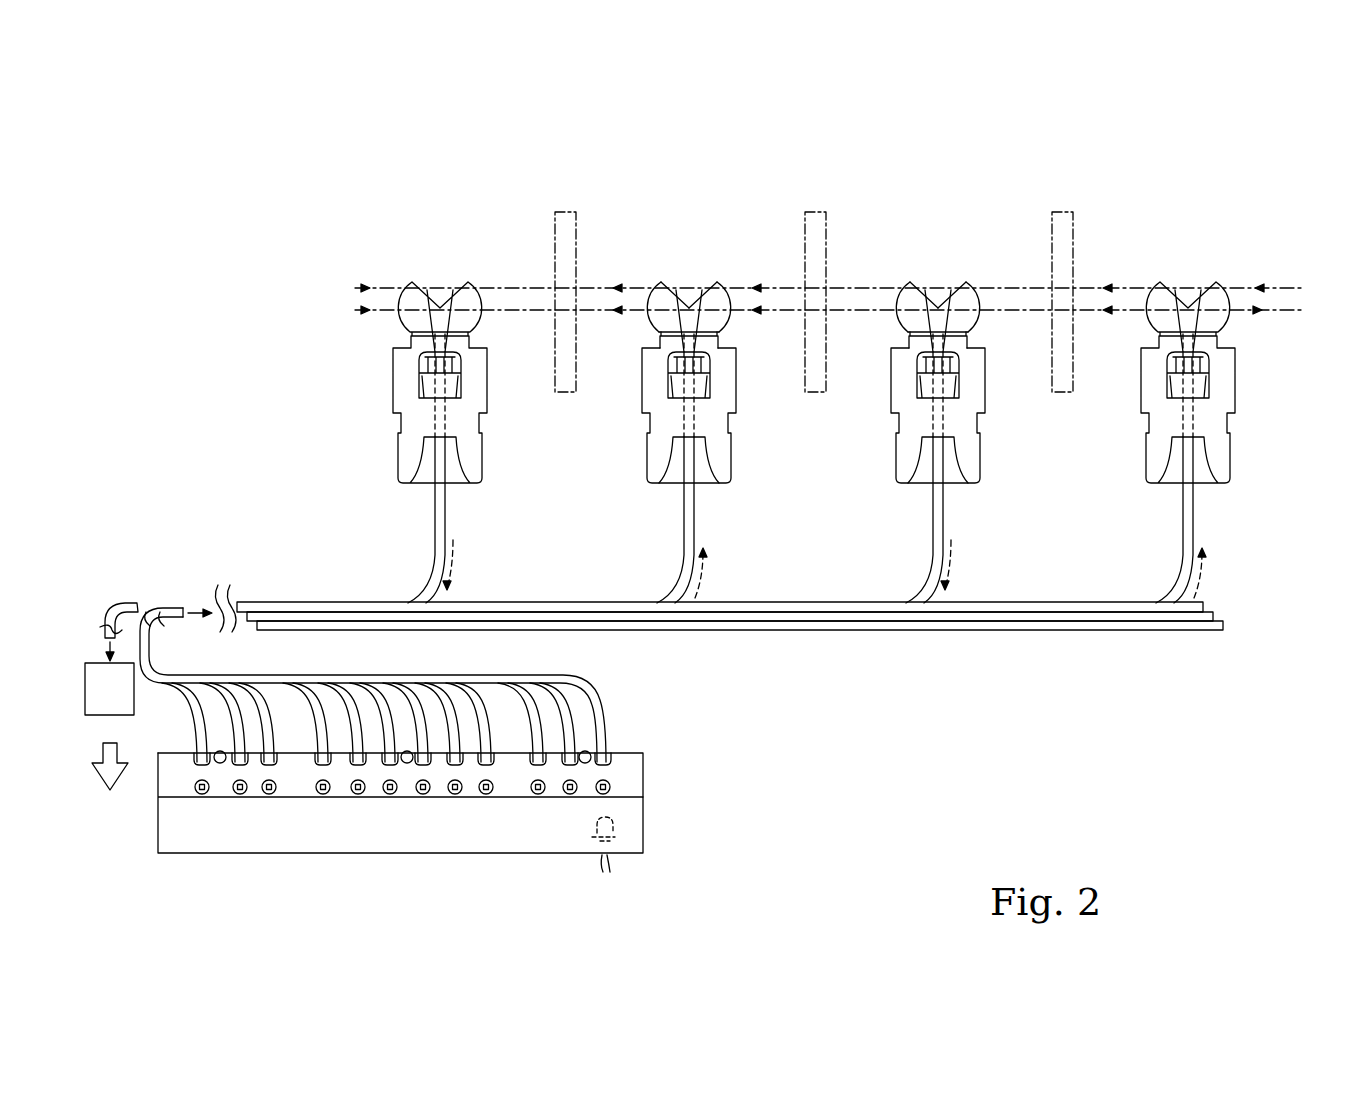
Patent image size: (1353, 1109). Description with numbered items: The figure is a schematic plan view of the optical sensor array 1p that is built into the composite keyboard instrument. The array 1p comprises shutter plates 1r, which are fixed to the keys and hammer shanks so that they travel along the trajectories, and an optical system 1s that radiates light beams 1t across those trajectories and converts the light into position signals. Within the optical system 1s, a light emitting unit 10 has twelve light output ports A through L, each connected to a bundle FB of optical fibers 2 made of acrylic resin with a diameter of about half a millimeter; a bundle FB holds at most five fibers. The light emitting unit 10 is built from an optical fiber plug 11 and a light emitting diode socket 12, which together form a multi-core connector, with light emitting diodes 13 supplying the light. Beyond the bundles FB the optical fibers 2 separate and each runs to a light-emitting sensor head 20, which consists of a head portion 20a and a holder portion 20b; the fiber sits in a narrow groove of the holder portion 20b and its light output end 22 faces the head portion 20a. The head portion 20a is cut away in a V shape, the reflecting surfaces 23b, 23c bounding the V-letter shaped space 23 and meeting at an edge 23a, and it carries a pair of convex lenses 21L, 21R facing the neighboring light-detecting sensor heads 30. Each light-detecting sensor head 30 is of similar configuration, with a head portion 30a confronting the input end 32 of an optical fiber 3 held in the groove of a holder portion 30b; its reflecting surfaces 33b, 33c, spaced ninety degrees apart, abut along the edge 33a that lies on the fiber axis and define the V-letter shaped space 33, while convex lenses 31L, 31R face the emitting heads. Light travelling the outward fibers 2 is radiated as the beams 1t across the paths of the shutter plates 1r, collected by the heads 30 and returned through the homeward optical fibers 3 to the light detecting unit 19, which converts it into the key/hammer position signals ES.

The optical sensor array 1p is at (1227, 198).
The optical system 1s is at (1255, 261).
The light beams 1t is at (588, 289).
The shutter plates 1r is at (574, 226).
The optical fibers 2 is at (696, 518).
The optical fibers 3 is at (447, 518).
The light emitting unit 10 is at (443, 826).
The optical fiber plug 11 is at (645, 758).
The light emitting diode socket 12 is at (645, 845).
The light emitting diodes 13 is at (569, 859).
The light detecting unit 19 is at (84, 660).
The light-emitting sensor heads 20 is at (906, 370).
The head portion 20a is at (662, 336).
The holder portion 20b is at (731, 462).
The convex lens 21L is at (652, 314).
The convex lens 21R is at (726, 314).
The light output end 22 is at (670, 360).
The V-letter shaped space 23 is at (688, 279).
The lens bottom surface 23a is at (690, 330).
The reflecting surface 23b is at (706, 289).
The reflecting surface 23c is at (667, 287).
The light-detecting sensor heads 30 is at (700, 370).
The head portion 30a is at (911, 336).
The holder portion 30b is at (980, 462).
The convex lens 31L is at (901, 314).
The convex lens 31R is at (975, 314).
The input end 32 is at (919, 360).
The V-letter shaped space 33 is at (937, 279).
The edge 33a is at (939, 330).
The reflecting surface 33b is at (955, 289).
The reflecting surface 33c is at (916, 287).
The bundles FB is at (604, 712).
The key/hammer position signals ES is at (106, 789).